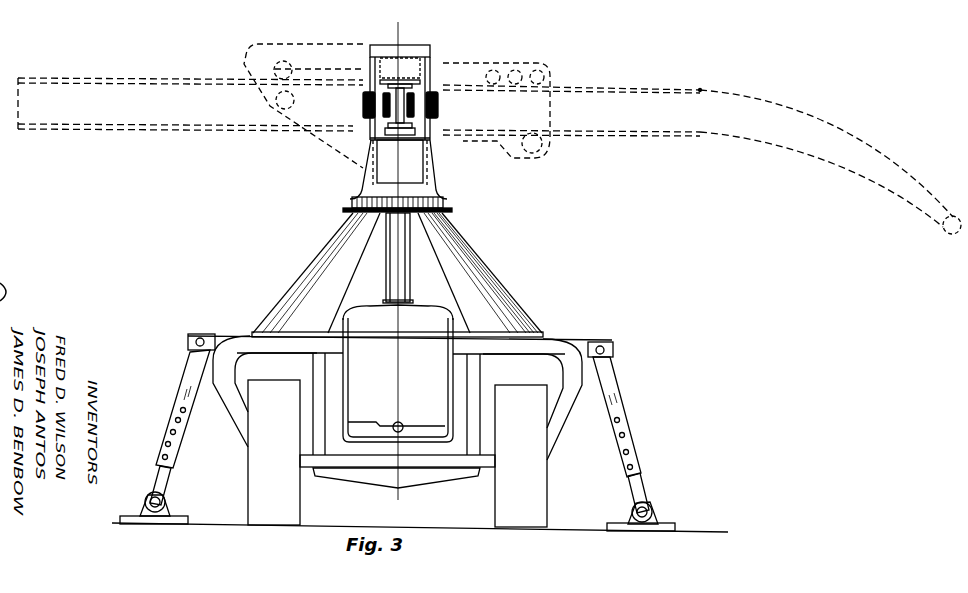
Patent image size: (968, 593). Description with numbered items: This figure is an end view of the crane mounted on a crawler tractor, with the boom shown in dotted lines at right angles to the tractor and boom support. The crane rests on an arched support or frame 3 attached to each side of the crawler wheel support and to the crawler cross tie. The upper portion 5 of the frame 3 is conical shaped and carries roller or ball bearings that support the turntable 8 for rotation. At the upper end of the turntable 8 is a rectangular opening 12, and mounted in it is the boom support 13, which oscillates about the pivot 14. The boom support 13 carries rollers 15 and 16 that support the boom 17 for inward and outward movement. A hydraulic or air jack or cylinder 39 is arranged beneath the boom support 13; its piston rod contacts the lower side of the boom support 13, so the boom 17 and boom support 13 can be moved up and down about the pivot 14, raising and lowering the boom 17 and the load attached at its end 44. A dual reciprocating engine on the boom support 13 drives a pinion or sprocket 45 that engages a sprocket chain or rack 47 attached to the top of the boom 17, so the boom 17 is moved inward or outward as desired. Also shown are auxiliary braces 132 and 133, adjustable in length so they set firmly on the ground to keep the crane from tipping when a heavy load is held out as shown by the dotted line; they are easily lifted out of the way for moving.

The arched support or frame 3 is at (560, 410).
The upper portion of the arch support 5 is at (489, 276).
The turntable 8 is at (362, 170).
The opening 12 is at (424, 76).
The boom support 13 is at (485, 63).
The pivot 14 is at (283, 103).
The roller 15 is at (281, 66).
The roller 16 is at (540, 150).
The boom 17 is at (804, 112).
The hydraulic or air jack or cylinder 39 is at (388, 279).
The end of the boom 44 is at (946, 228).
The pinion or sprocket 45 is at (508, 76).
The sprocket chain or rack 47 is at (605, 86).
The auxiliary brace 132 is at (623, 391).
The auxiliary brace 133 is at (180, 385).